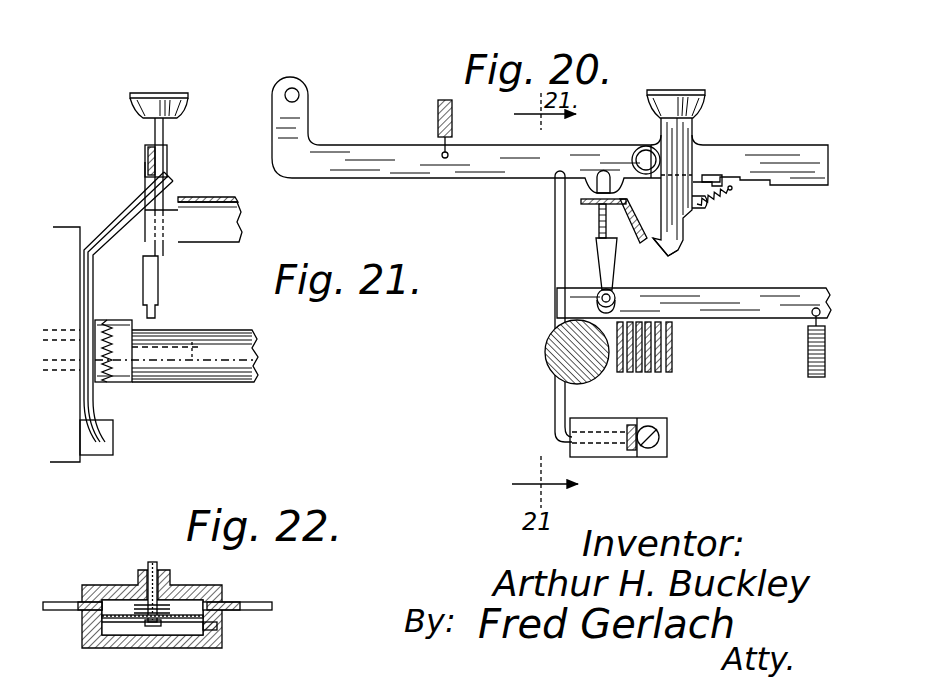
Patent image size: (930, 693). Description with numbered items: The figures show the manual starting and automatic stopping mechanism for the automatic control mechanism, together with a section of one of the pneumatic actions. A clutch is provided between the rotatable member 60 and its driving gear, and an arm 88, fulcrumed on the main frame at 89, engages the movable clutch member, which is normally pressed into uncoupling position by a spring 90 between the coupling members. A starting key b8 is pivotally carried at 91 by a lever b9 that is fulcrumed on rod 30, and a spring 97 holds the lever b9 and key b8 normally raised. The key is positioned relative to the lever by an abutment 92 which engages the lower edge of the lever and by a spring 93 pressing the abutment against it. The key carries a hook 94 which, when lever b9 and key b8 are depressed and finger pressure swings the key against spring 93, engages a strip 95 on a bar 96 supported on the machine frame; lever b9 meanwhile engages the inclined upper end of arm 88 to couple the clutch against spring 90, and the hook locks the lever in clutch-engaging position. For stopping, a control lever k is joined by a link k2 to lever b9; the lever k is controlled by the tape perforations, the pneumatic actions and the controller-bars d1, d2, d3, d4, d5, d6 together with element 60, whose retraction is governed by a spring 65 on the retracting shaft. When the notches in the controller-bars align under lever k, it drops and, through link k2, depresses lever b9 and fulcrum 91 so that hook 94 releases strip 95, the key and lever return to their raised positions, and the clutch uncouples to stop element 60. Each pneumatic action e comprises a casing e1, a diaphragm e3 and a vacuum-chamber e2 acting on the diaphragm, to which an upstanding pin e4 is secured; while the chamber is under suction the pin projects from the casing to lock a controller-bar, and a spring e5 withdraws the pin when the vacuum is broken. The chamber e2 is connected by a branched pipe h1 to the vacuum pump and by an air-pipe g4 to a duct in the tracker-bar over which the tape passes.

In FIG. 20, the rod 30 is at (300, 93).
In FIG. 20, the spring 97 is at (438, 104).
In FIG. 20, the starting key b8 is at (678, 130).
In FIG. 21, the starting key b8 is at (164, 144).
In FIG. 20, the lever b9 is at (582, 158).
In FIG. 20, the pivot 91 is at (638, 144).
In FIG. 20, the abutment 92 is at (717, 175).
In FIG. 20, the spring 93 is at (716, 200).
In FIG. 20, the hook 94 is at (668, 257).
In FIG. 20, the bar 96 is at (581, 201).
In FIG. 21, the bar 96 is at (217, 200).
In FIG. 20, the strip 95 is at (637, 220).
In FIG. 21, the strip 95 is at (208, 243).
In FIG. 20, the arm 88 is at (555, 263).
In FIG. 21, the arm 88 is at (120, 212).
In FIG. 20, the link k2 is at (613, 252).
In FIG. 20, the control lever k is at (748, 314).
In FIG. 20, the fulcrum 89 is at (613, 458).
In FIG. 21, the fulcrum 89 is at (113, 442).
In FIG. 20, the controller-bar d1 is at (620, 373).
In FIG. 20, the controller-bar d2 is at (630, 373).
In FIG. 20, the controller-bar d3 is at (640, 373).
In FIG. 20, the controller-bar d4 is at (650, 374).
In FIG. 20, the controller-bar d5 is at (663, 345).
In FIG. 20, the controller-bar d6 is at (674, 366).
In FIG. 21, the spring 90 is at (114, 340).
In FIG. 21, the rotatable member 60 is at (205, 336).
In FIG. 21, the spring 65 is at (96, 375).
In FIG. 22, the pneumatic action e is at (226, 591).
In FIG. 22, the casing e1 is at (104, 592).
In FIG. 22, the vacuum-chamber e2 is at (192, 606).
In FIG. 22, the diaphragm e3 is at (113, 626).
In FIG. 22, the pin e4 is at (152, 563).
In FIG. 22, the spring e5 is at (178, 602).
In FIG. 22, the branched pipe h1 is at (63, 602).
In FIG. 22, the air-pipe g4 is at (262, 602).